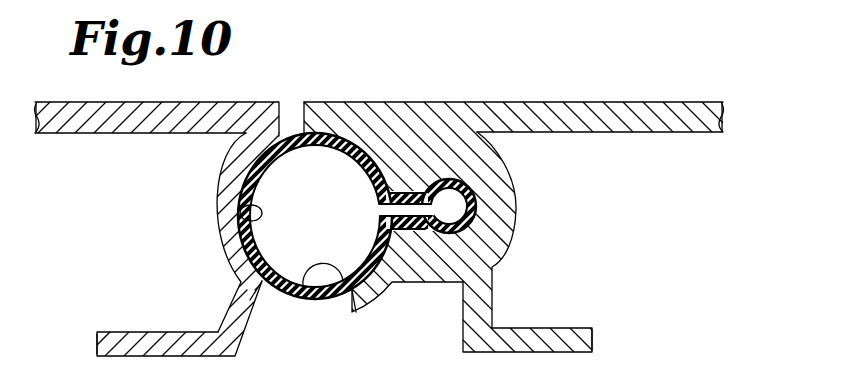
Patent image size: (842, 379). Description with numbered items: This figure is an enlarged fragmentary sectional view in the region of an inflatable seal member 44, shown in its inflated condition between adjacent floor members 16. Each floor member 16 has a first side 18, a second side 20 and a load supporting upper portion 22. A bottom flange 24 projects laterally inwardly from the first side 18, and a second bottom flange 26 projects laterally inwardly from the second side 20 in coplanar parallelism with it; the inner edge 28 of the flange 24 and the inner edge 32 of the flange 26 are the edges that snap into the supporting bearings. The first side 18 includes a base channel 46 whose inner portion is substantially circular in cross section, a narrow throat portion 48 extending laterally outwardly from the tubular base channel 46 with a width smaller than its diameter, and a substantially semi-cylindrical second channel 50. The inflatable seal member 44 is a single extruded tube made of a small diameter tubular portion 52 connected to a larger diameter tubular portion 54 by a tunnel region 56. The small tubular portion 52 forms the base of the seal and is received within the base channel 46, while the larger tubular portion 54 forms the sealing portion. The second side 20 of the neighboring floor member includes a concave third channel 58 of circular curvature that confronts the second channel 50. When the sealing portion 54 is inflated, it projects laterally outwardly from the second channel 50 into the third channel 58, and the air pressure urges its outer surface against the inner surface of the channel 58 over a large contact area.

The floor member 16 is at (95, 137).
The first side 18 is at (445, 283).
The second side 20 is at (215, 176).
The load supporting upper portion 22 is at (182, 101).
The bottom flange 24 is at (535, 328).
The second bottom flange 26 is at (160, 331).
The inner edge 28 is at (592, 340).
The inner edge 32 is at (97, 343).
The inflatable seal member 44 is at (269, 300).
The base channel 46 is at (477, 204).
The throat portion 48 is at (380, 203).
The second channel 50 is at (280, 291).
The small diameter tubular portion 52 is at (440, 166).
The larger diameter tubular portion 54 is at (360, 136).
The tunnel region 56 is at (395, 275).
The third channel 58 is at (245, 209).